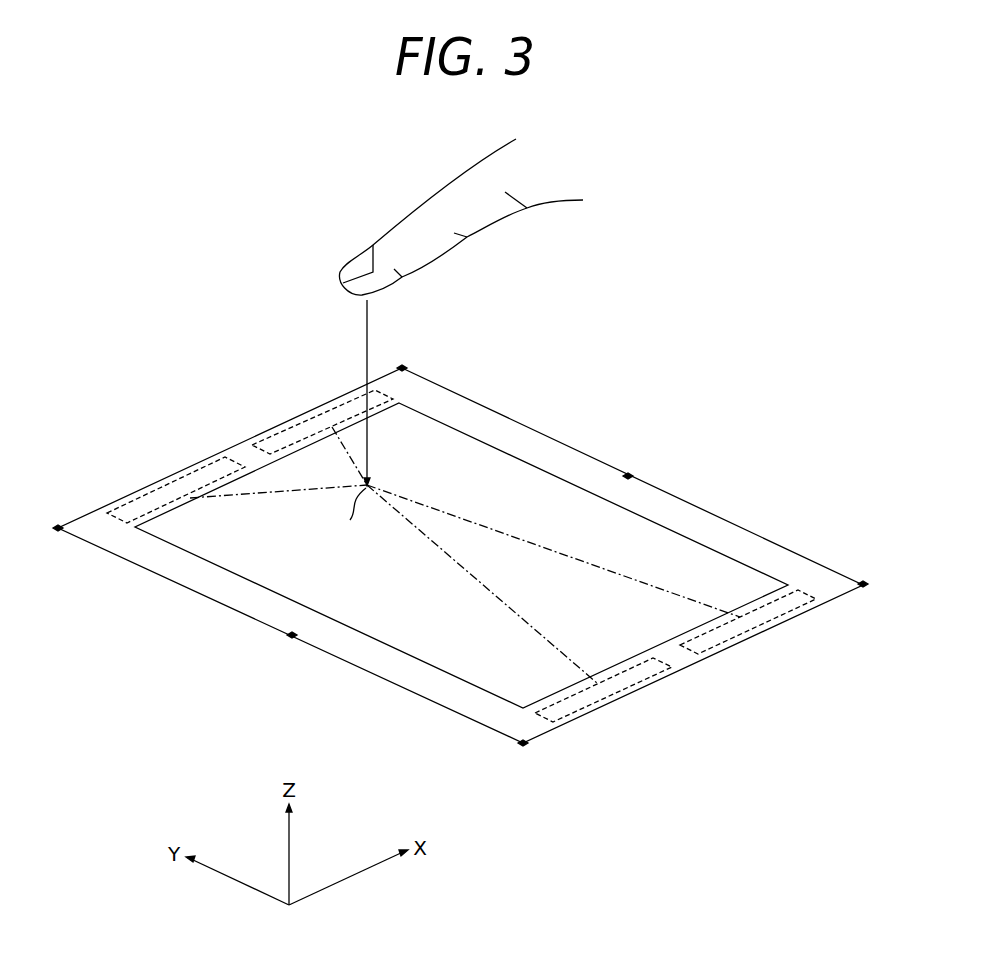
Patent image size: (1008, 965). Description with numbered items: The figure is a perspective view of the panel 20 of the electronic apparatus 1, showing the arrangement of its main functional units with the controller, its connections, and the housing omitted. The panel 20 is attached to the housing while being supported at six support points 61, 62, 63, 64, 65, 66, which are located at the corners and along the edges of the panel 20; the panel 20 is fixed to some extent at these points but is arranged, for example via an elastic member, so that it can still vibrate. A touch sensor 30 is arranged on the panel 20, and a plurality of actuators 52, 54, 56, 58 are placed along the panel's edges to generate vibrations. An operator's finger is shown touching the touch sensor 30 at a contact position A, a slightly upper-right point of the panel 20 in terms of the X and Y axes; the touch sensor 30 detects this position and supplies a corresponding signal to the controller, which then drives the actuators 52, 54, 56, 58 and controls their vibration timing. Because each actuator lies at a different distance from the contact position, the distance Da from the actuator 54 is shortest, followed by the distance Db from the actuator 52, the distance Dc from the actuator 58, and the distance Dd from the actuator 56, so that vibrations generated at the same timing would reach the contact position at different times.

The electronic apparatus 1 is at (572, 366).
The panel 20 is at (157, 574).
The touch sensor 30 is at (387, 649).
The actuator 52 is at (168, 482).
The actuator 54 is at (307, 416).
The actuator 56 is at (627, 693).
The actuator 58 is at (772, 629).
The support point 61 is at (61, 526).
The support point 62 is at (290, 638).
The support point 63 is at (520, 746).
The support point 64 is at (405, 366).
The support point 65 is at (633, 476).
The support point 66 is at (862, 580).